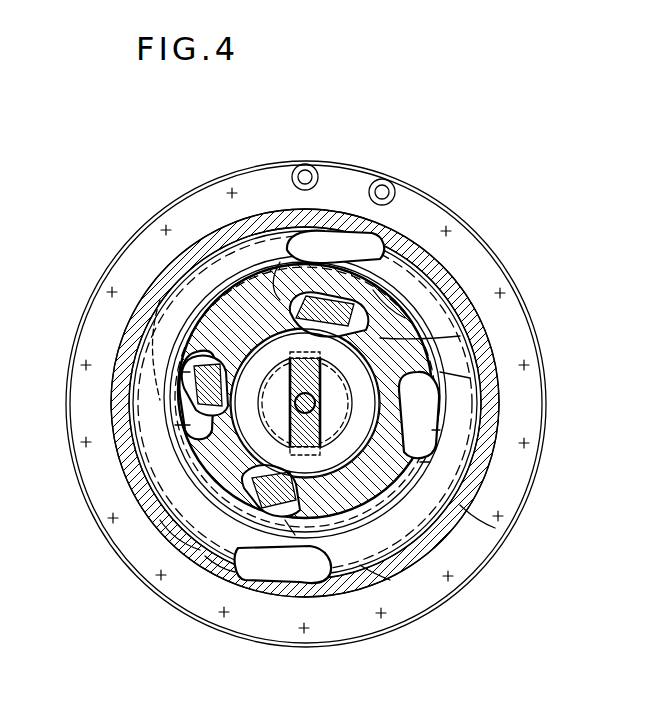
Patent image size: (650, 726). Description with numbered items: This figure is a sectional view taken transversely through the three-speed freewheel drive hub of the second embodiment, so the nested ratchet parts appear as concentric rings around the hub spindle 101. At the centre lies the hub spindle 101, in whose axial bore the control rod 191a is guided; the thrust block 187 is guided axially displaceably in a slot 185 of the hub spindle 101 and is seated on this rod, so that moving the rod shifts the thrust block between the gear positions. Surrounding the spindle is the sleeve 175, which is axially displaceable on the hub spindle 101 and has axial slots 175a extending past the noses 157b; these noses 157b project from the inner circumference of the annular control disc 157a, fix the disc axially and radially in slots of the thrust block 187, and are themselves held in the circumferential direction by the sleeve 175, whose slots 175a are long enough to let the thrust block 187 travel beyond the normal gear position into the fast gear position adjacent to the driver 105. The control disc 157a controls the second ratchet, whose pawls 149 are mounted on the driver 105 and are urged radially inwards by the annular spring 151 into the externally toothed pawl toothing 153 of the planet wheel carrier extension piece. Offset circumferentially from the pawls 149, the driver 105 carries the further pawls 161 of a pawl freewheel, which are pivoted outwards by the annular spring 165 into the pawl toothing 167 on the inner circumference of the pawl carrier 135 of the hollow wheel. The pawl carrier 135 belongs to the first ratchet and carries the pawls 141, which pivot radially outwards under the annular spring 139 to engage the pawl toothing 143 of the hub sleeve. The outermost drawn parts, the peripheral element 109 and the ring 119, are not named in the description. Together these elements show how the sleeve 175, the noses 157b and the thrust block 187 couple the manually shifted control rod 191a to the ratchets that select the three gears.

The hub spindle 101 is at (417, 533).
The driver 105 is at (380, 573).
The cover 109 is at (148, 236).
The outer ring 119 is at (252, 210).
The pawl carrier 135 is at (213, 287).
The annular spring 139 is at (417, 250).
The pawls 141 is at (335, 262).
The pawl toothing 143 is at (388, 222).
The pawls 149 is at (204, 556).
The annular spring 151 is at (383, 338).
The pawl toothing 153 is at (284, 276).
The control disc 157a is at (187, 474).
The noses 157b is at (307, 265).
The pawls 161 is at (183, 378).
The annular spring 165 is at (216, 340).
The pawl toothing 167 is at (177, 421).
The sleeve 175 is at (463, 510).
The axial slots 175a is at (291, 530).
The slot 185 is at (168, 527).
The thrust block 187 is at (295, 380).
The control rod 191a is at (232, 406).